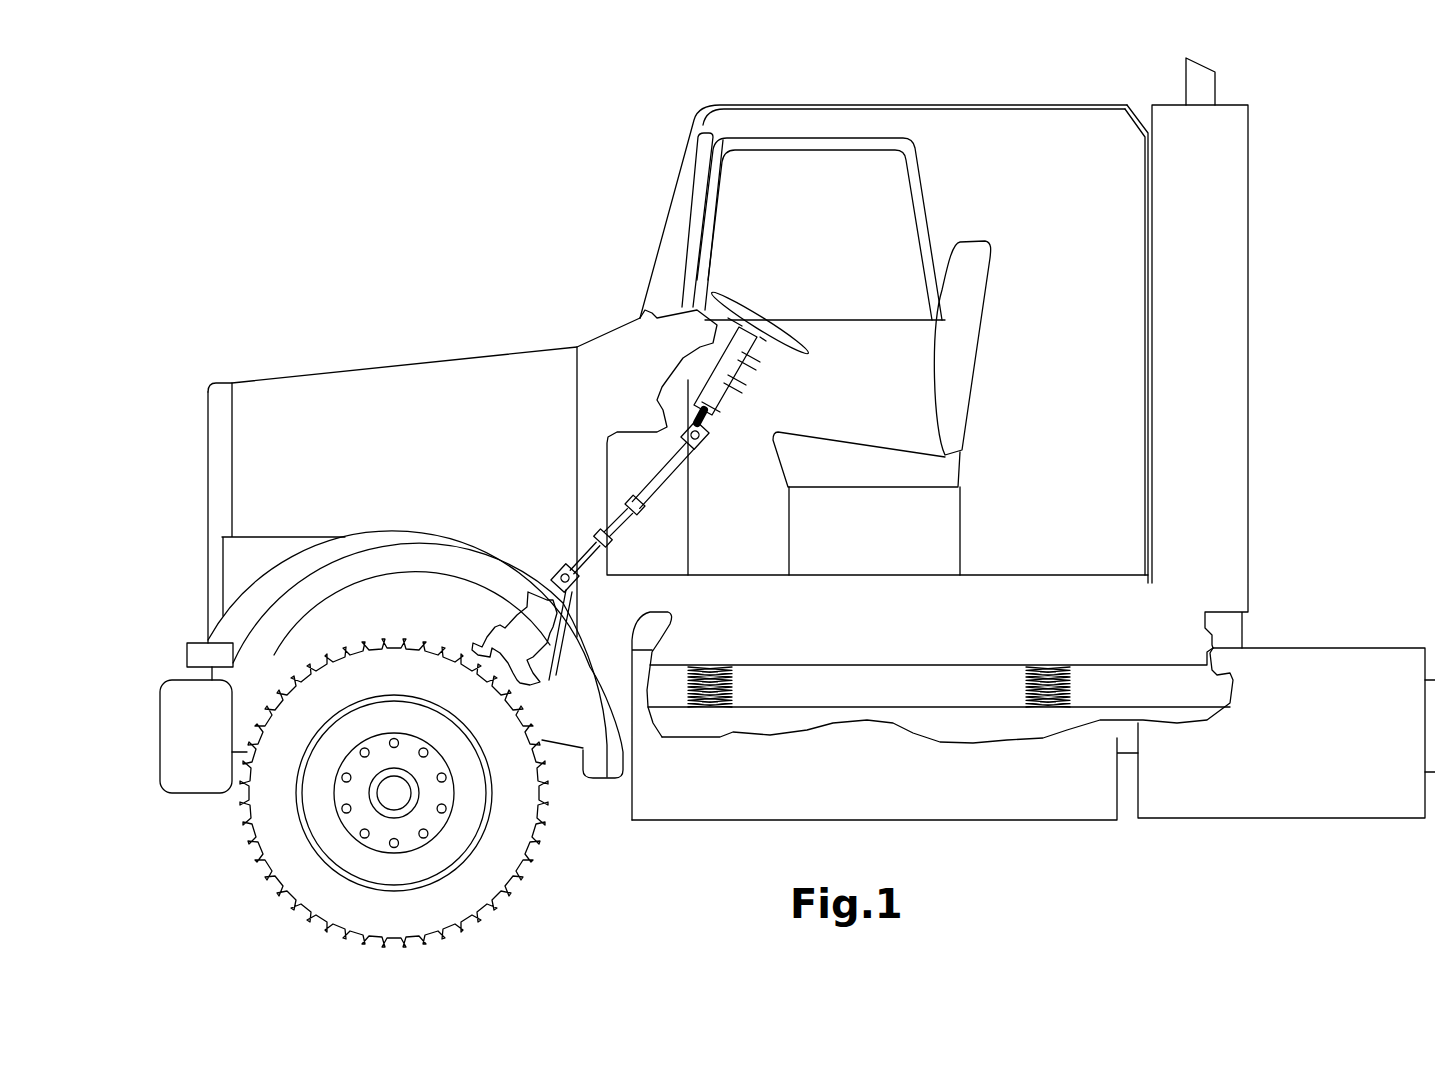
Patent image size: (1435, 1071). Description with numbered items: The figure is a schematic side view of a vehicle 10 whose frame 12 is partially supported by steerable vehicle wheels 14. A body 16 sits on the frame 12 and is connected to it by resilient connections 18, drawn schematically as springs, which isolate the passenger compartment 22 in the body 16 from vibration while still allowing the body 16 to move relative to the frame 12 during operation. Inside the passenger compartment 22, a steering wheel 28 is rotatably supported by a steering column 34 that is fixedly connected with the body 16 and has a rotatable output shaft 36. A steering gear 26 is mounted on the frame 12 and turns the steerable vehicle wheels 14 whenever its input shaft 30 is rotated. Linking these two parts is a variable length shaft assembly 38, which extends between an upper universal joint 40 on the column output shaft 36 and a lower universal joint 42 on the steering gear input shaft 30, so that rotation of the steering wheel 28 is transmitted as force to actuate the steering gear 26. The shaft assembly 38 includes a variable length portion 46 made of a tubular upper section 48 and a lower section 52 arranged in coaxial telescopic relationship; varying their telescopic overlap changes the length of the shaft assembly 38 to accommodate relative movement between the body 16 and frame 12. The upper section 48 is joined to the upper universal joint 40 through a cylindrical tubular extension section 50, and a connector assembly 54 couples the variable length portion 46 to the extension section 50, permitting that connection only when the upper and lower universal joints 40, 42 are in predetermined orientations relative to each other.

The vehicle 10 is at (563, 156).
The frame 12 is at (1013, 723).
The steerable vehicle wheels 14 is at (275, 797).
The body 16 is at (426, 380).
The resilient connections 18 is at (708, 667).
The passenger compartment 22 is at (962, 150).
The steering gear 26 is at (505, 652).
The steering wheel 28 is at (780, 315).
The input shaft 30 is at (551, 643).
The steering column 34 is at (727, 384).
The output shaft 36 is at (703, 409).
The variable length shaft assembly 38 is at (668, 516).
The upper universal joint 40 is at (707, 425).
The lower universal joint 42 is at (578, 588).
The variable length portion 46 is at (613, 555).
The tubular upper section 48 is at (612, 517).
The extension section 50 is at (670, 468).
The lower section 52 is at (590, 543).
The connector assembly 54 is at (640, 497).